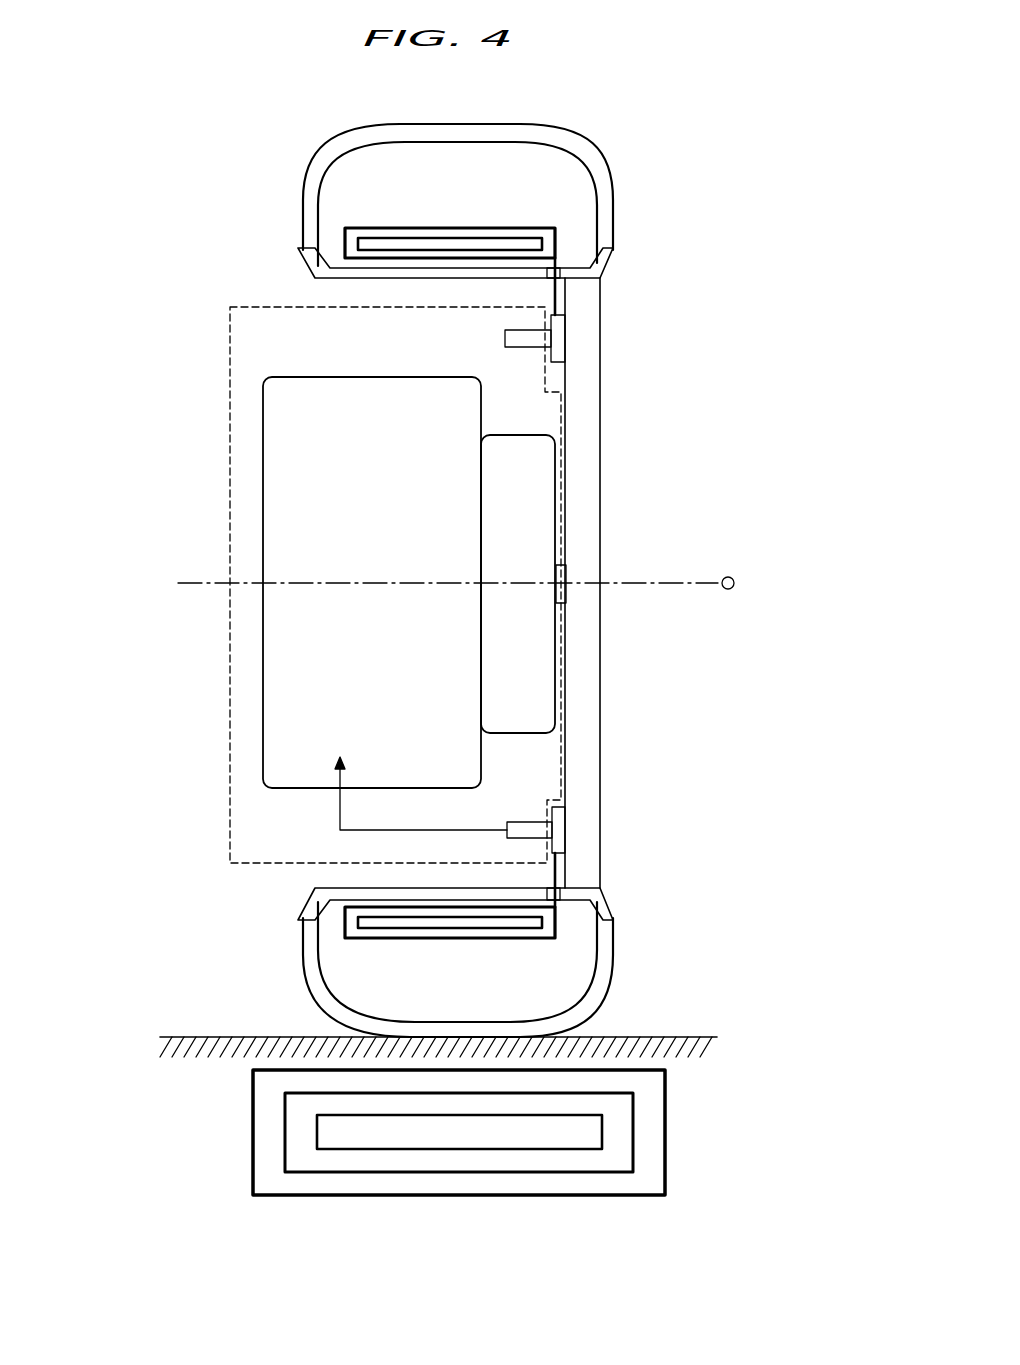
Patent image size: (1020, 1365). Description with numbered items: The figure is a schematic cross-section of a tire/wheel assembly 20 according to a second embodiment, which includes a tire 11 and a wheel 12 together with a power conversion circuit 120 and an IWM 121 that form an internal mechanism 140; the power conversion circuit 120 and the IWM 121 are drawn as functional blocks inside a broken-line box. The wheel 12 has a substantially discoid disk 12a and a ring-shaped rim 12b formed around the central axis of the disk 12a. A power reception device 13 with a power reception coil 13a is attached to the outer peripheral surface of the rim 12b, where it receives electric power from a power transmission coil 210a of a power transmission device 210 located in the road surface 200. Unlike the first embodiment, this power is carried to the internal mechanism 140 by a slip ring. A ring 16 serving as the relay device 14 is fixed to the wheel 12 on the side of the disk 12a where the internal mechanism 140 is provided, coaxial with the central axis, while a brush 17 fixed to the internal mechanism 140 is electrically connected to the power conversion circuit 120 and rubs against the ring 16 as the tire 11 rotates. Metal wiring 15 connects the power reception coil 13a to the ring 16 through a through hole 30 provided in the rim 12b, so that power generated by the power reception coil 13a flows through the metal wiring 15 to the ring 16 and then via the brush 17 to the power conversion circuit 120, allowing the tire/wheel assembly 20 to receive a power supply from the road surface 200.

The tire 11 is at (586, 140).
The wheel 12 is at (479, 574).
The disk 12a is at (587, 387).
The rim 12b is at (342, 272).
The power reception device 13 is at (450, 581).
The power reception coil 13a is at (443, 227).
The relay device 14 is at (558, 338).
The metal wiring 15 is at (598, 274).
The ring 16 is at (628, 584).
The brush 17 is at (516, 338).
The tire/wheel assembly 20 is at (693, 201).
The through hole 30 is at (560, 267).
The power conversion circuit 120 is at (303, 663).
The IWM 121 is at (530, 671).
The internal mechanism 140 is at (230, 395).
The road surface 200 is at (650, 1035).
The power transmission device 210 is at (381, 1132).
The power transmission coil 210a is at (253, 1127).